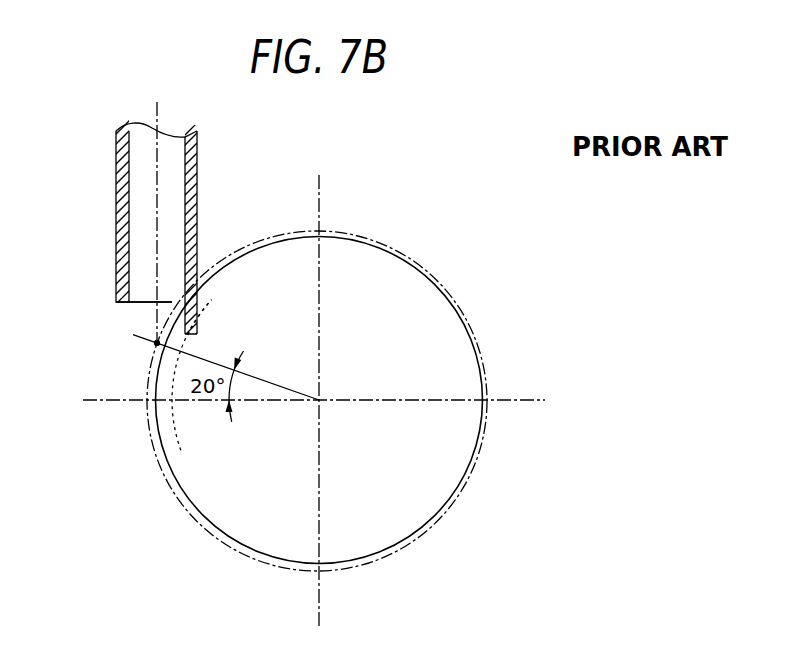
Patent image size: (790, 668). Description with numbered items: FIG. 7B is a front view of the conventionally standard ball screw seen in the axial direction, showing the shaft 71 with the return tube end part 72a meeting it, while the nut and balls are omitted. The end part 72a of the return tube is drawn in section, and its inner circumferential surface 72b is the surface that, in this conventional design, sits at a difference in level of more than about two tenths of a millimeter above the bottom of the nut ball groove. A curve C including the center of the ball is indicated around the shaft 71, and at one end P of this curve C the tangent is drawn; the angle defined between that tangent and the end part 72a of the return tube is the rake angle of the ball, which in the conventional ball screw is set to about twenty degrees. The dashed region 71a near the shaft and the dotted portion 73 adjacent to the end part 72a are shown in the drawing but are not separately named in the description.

The roller 71 is at (443, 324).
The roller surface contact region 71a is at (174, 422).
The end part of the return tube 72a is at (198, 160).
The inner circumferential surface of the end part 72b is at (140, 303).
The liquid layer 73 is at (197, 313).
The one end of curve C P is at (155, 344).
The curve including the center of the ball C is at (192, 512).